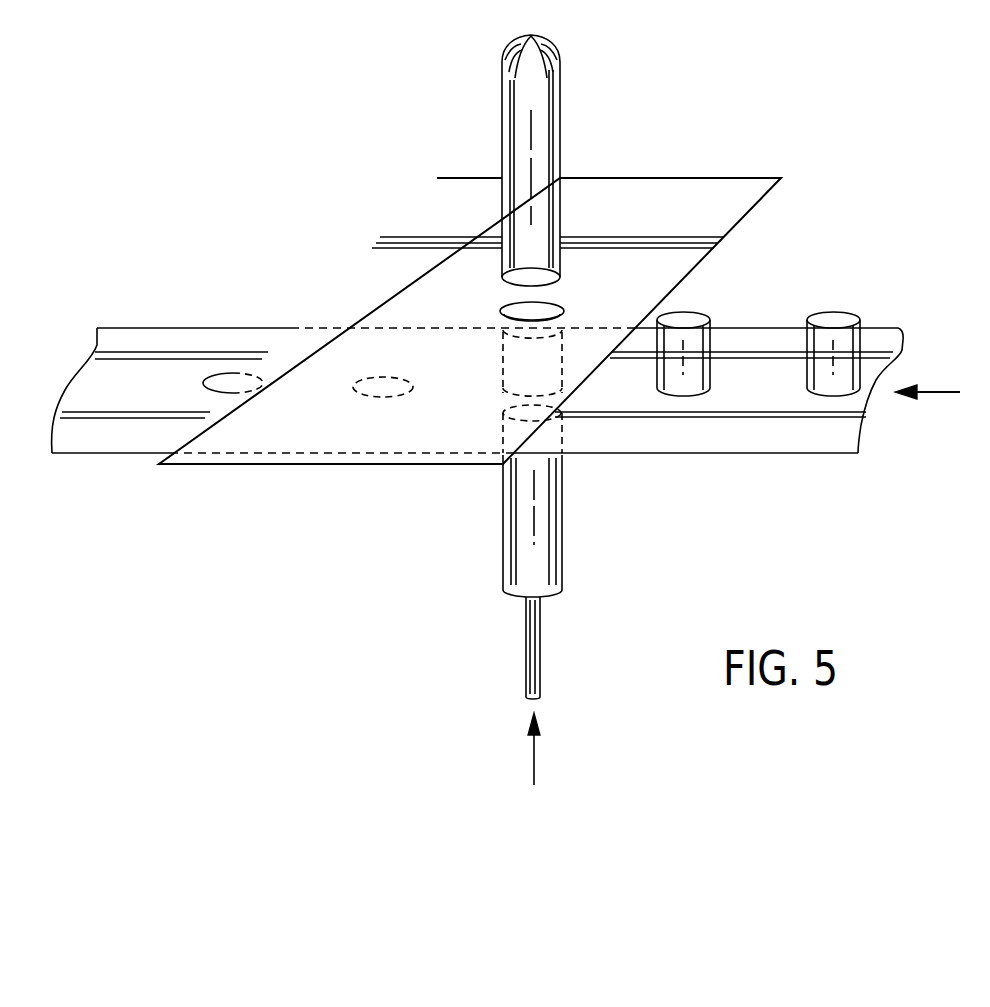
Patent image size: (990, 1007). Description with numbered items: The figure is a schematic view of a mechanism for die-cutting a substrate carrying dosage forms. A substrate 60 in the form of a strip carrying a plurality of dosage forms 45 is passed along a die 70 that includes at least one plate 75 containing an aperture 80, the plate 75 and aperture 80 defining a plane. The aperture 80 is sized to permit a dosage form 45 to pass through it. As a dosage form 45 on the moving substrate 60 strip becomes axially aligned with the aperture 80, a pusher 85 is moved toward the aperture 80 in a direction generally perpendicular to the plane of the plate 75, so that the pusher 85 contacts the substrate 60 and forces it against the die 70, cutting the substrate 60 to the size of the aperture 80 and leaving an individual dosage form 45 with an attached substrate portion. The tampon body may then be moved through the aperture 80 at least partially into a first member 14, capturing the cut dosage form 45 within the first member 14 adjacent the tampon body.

The first member 14 is at (560, 118).
The dosage form 45 is at (500, 350).
The substrate 60 is at (773, 338).
The die 70 is at (341, 241).
The plate 75 is at (717, 197).
The aperture 80 is at (565, 316).
The pusher 85 is at (562, 560).